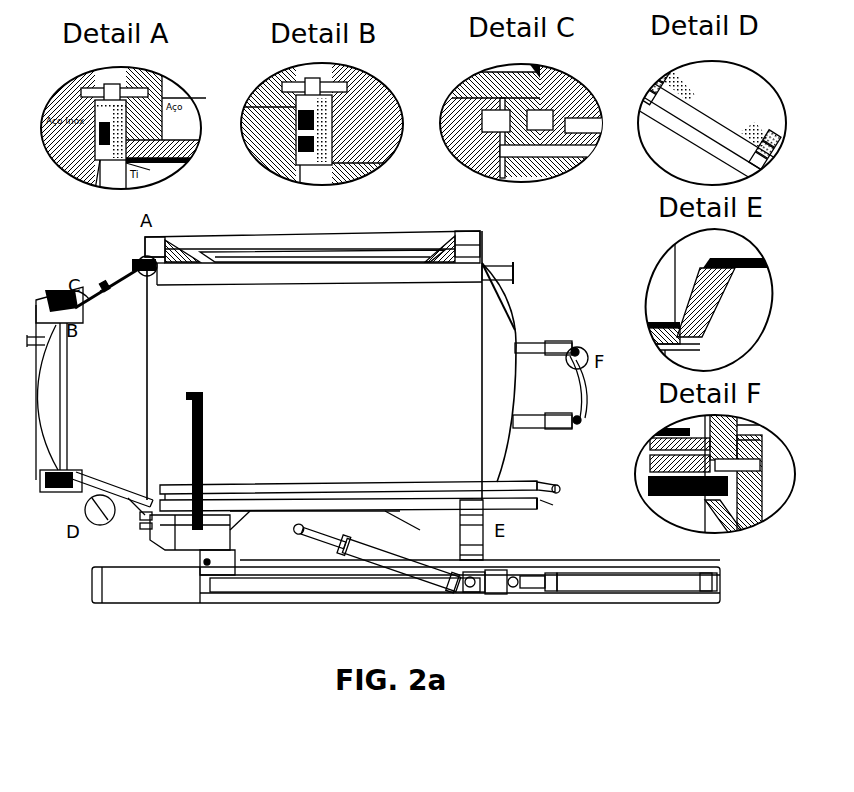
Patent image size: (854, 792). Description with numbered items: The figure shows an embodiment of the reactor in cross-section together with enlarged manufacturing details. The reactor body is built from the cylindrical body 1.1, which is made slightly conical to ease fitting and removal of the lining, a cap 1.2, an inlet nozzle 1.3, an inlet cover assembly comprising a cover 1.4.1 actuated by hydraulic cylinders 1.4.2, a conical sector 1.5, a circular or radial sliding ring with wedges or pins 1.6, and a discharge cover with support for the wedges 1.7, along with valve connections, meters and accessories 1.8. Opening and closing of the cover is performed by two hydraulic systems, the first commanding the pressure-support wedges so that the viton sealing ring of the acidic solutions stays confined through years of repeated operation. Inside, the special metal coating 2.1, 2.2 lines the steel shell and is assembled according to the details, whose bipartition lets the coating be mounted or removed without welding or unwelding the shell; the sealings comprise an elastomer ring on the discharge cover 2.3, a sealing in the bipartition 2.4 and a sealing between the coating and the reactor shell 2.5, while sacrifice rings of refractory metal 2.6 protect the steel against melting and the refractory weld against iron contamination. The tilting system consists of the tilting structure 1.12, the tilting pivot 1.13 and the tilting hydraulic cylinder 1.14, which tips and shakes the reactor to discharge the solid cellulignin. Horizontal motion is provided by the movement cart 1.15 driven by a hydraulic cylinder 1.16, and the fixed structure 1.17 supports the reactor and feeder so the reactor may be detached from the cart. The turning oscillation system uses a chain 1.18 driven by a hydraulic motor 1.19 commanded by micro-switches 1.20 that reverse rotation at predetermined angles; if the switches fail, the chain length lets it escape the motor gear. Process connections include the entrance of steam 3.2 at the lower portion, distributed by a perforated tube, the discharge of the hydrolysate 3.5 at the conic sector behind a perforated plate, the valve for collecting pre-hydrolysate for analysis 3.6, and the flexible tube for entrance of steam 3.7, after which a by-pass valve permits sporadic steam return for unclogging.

The cylindrical body 1.1 is at (248, 262).
The tilting structure 1.12 is at (285, 243).
The cap 1.2 is at (497, 285).
The inlet nozzle 1.3 is at (530, 343).
The cover 1.4.1 is at (583, 393).
The hydraulic cylinders 1.4.2 is at (573, 424).
The conical sector 1.5 is at (122, 282).
The sliding ring with wedges 1.6 is at (88, 302).
The discharge cover with support for the wedges 1.7 is at (38, 398).
The connections 1.8 is at (140, 520).
The tilting pivot 1.13 is at (204, 562).
The tilting hydraulic cylinder 1.14 is at (375, 557).
The movement cart 1.15 is at (265, 588).
The hydraulic cylinder 1.16 is at (573, 583).
The fixed structure 1.17 is at (115, 588).
The chain 1.18 is at (205, 455).
The hydraulic motor 1.19 is at (348, 498).
The micro-switches 1.20 is at (191, 410).
The special metal coating 2.1 is at (205, 270).
The special metal coating 2.2 is at (118, 492).
The elastomer ring on the discharge cover 2.3 is at (315, 174).
The bipartition sealing 2.4 is at (104, 174).
The sealing between coating and reactor shell 2.5 is at (348, 108).
The sacrifice rings of refractory metal 2.6 is at (688, 488).
The entrance of steam 3.2 is at (552, 505).
The discharge of the hydrolysate 3.5 is at (86, 500).
The valve for collecting pre-hydrolysate 3.6 is at (120, 520).
The flexible tube for entrance of steam 3.7 is at (560, 487).